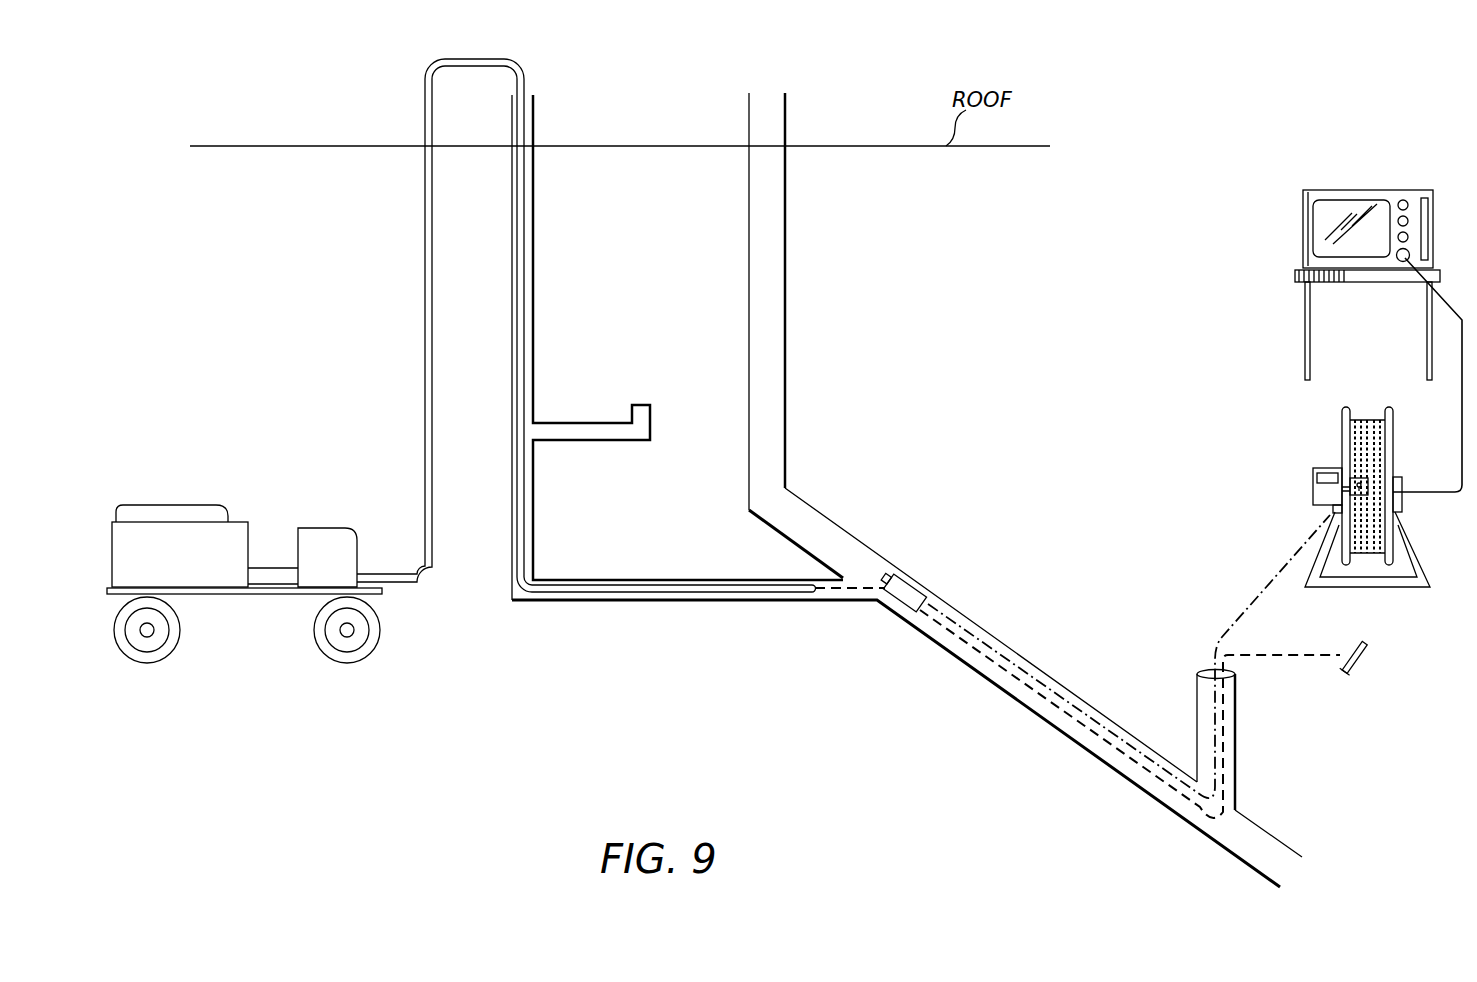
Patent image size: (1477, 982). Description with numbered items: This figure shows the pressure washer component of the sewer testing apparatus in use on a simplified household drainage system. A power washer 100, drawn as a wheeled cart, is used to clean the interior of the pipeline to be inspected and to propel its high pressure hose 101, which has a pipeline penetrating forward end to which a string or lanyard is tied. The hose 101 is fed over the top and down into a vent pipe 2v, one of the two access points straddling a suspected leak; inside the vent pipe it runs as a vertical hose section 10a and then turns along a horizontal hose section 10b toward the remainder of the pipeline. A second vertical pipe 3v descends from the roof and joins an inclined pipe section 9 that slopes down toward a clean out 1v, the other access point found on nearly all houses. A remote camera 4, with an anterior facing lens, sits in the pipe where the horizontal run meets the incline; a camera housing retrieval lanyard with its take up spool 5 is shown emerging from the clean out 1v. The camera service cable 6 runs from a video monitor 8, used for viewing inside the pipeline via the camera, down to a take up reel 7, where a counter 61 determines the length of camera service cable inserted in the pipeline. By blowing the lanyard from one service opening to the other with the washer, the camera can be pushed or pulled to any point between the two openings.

The power washer 100 is at (247, 520).
The high pressure hose 101 is at (425, 276).
The vent pipe 2v is at (534, 121).
The vertical hose section inside pipe 10a is at (533, 334).
The horizontal hose section 10b is at (682, 601).
The vertical pipe section 3v is at (786, 116).
The inclined pipe section 9 is at (786, 383).
The remote camera 4 is at (913, 592).
The clean out 1v is at (1237, 693).
The camera housing retrieval lanyard and take up spool 5 is at (1355, 672).
The video monitor 8 is at (1380, 190).
The camera service cable 6 is at (1440, 306).
The take up reel 7 is at (1393, 432).
The counter 61 is at (1313, 480).